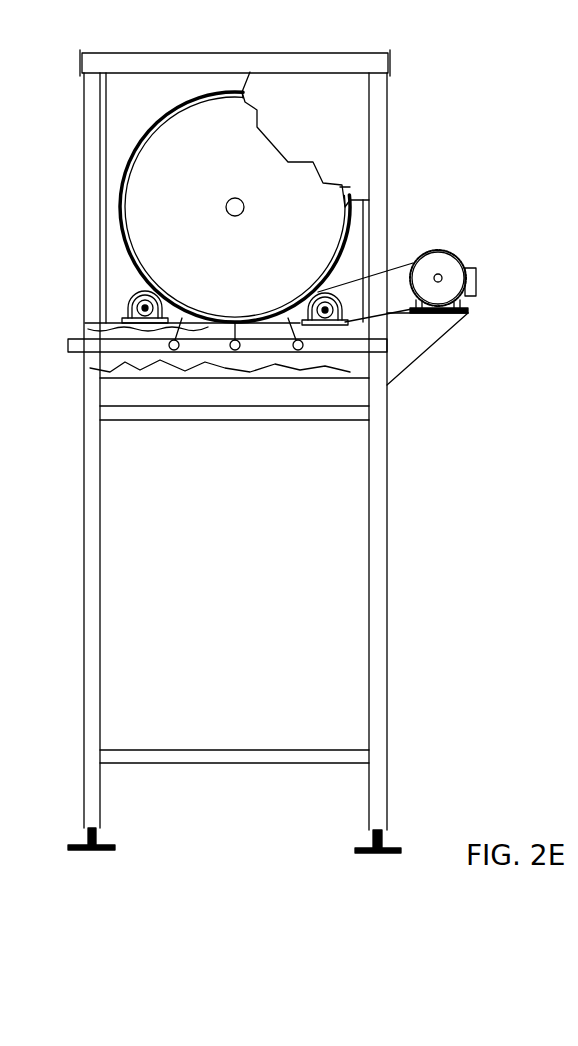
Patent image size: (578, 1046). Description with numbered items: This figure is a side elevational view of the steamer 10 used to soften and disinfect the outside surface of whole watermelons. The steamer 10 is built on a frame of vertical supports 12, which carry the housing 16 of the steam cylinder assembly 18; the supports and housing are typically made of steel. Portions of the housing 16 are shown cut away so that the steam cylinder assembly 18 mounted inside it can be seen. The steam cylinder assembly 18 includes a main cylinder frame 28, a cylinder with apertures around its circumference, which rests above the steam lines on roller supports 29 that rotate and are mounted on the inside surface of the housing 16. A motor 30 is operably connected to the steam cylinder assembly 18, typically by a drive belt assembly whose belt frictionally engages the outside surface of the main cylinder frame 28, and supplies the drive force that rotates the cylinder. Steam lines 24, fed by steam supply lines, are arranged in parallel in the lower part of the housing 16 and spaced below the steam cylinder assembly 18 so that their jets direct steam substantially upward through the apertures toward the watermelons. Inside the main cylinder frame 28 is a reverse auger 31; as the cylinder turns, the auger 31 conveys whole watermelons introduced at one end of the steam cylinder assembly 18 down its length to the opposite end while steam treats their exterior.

The steamer 10 is at (428, 128).
The vertical supports 12 is at (383, 448).
The housing 16 is at (334, 117).
The steam cylinder assembly 18 is at (152, 119).
The steam lines 24 is at (177, 341).
The main cylinder frame 28 is at (340, 253).
The roller supports 29 is at (120, 293).
The motor 30 is at (455, 252).
The reverse auger 31 is at (118, 208).